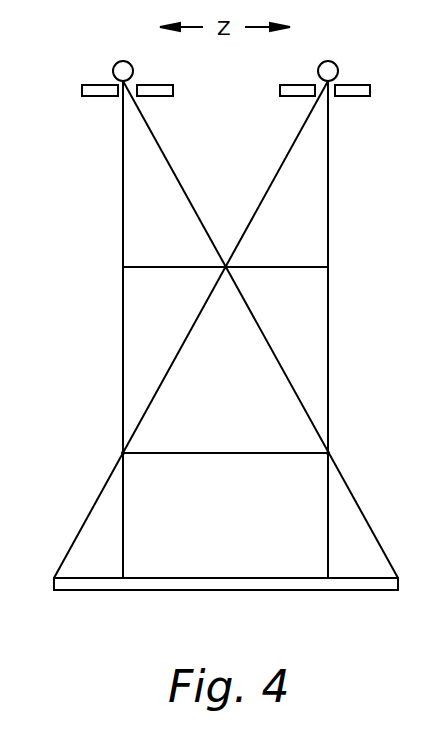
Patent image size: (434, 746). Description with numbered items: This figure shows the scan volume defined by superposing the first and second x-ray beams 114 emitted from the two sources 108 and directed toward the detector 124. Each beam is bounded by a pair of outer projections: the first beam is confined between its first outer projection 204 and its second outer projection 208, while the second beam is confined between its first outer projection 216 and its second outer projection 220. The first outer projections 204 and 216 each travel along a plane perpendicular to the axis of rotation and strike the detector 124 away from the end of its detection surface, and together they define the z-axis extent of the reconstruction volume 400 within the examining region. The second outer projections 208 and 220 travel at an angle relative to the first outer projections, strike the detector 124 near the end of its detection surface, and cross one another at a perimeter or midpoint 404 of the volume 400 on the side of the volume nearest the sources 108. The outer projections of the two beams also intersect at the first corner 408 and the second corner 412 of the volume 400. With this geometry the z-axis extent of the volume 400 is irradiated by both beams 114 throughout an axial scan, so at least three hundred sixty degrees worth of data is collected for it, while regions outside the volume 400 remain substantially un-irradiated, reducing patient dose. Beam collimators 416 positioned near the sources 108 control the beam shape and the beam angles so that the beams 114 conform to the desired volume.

The source 108 is at (341, 33).
The beam collimator 416 is at (100, 96).
The first outer projection 204 is at (123, 181).
The first outer projection 216 is at (328, 183).
The second outer projection 208 is at (160, 142).
The second outer projection 220 is at (275, 172).
The x-ray beam 114 is at (360, 230).
The midpoint 404 is at (225, 270).
The reconstruction volume 400 is at (240, 423).
The first corner 408 is at (123, 453).
The second corner 412 is at (328, 453).
The detector 124 is at (243, 590).